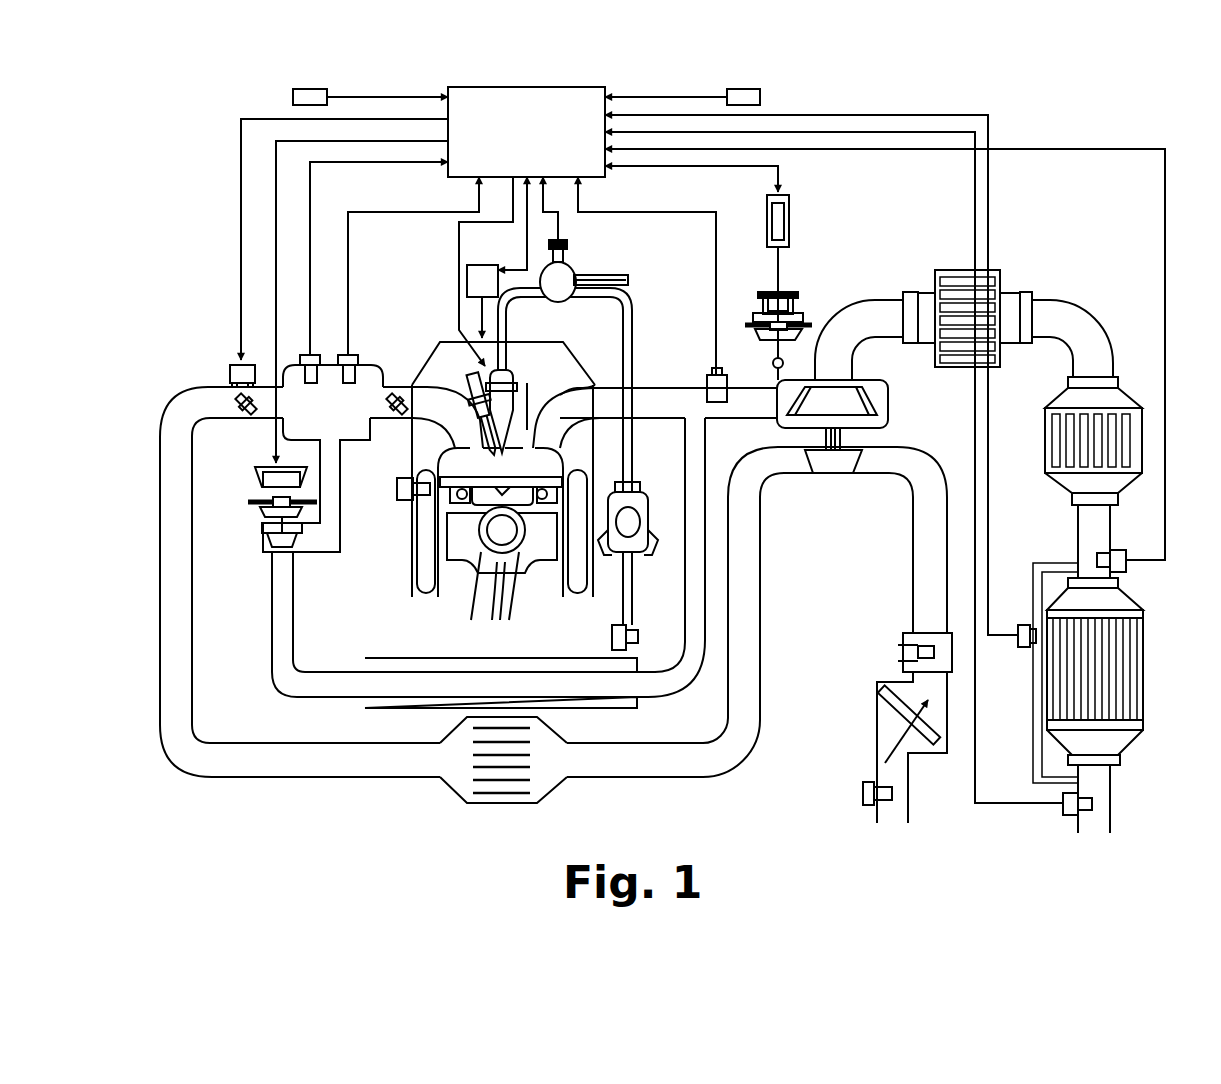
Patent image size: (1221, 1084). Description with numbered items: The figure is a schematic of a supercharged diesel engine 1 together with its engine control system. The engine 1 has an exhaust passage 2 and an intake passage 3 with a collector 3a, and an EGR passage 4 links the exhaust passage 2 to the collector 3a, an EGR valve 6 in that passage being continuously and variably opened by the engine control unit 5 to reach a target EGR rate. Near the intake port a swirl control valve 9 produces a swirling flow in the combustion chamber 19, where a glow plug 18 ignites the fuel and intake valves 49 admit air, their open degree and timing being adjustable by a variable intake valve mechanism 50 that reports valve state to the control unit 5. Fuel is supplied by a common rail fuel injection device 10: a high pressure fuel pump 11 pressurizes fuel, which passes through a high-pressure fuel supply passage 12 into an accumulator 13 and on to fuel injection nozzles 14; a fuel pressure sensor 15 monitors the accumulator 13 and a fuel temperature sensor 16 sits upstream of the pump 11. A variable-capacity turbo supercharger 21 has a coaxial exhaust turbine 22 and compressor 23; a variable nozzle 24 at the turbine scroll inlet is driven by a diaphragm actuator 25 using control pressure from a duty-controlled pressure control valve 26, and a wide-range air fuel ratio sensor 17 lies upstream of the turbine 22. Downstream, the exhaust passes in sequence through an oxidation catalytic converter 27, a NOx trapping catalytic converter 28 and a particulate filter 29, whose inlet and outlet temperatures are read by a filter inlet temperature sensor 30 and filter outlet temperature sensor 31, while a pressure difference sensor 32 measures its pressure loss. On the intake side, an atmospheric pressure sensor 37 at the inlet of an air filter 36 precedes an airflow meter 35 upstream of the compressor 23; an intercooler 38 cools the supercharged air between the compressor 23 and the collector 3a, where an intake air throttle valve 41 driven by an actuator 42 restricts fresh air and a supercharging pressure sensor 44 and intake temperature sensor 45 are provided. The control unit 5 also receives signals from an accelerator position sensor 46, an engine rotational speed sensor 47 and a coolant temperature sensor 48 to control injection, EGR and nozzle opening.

The engine 1 is at (402, 586).
The exhaust passage 2 is at (646, 388).
The intake passage 3 is at (160, 575).
The collector 3a is at (290, 360).
The EGR passage 4 is at (272, 676).
The engine control unit 5 is at (612, 178).
The EGR valve 6 is at (258, 538).
The swirl control valve 9 is at (390, 412).
The common rail fuel injection device 10 is at (586, 271).
The high pressure fuel pump 11 is at (648, 500).
The high-pressure fuel supply passage 12 is at (630, 297).
The accumulator 13 is at (560, 293).
The fuel injection nozzles 14 is at (507, 382).
The fuel pressure sensor 15 is at (567, 245).
The fuel temperature sensor 16 is at (610, 636).
The air fuel ratio sensor 17 is at (714, 372).
The glow plug 18 is at (487, 372).
The combustion chamber 19 is at (588, 462).
The turbo supercharger 21 is at (895, 432).
The exhaust turbine 22 is at (852, 388).
The compressor 23 is at (849, 474).
The variable nozzle 24 is at (772, 366).
The diaphragm actuator 25 is at (790, 293).
The pressure control valve 26 is at (789, 215).
The oxidation catalytic converter 27 is at (955, 268).
The NOx trapping catalytic converter 28 is at (1045, 432).
The particulate filter 29 is at (1143, 680).
The filter inlet temperature sensor 30 is at (1127, 565).
The filter outlet temperature sensor 31 is at (1063, 808).
The pressure difference sensor 32 is at (1018, 650).
The airflow meter 35 is at (903, 640).
The air filter 36 is at (880, 716).
The atmospheric pressure sensor 37 is at (863, 794).
The intercooler 38 is at (543, 778).
The intake air throttle valve 41 is at (238, 400).
The actuator 42 is at (232, 363).
The supercharging pressure sensor 44 is at (314, 352).
The intake temperature sensor 45 is at (352, 352).
The accelerator position sensor 46 is at (293, 97).
The engine rotational speed sensor 47 is at (760, 97).
The temperature sensor 48 is at (392, 498).
The intake valves 49 is at (465, 430).
The variable intake valve mechanism 50 is at (486, 265).